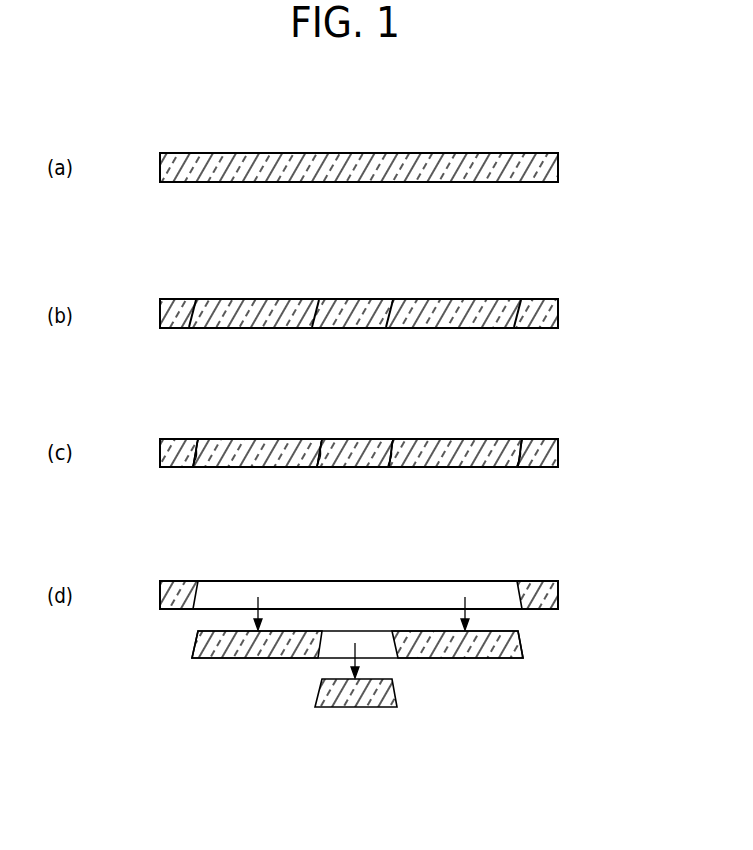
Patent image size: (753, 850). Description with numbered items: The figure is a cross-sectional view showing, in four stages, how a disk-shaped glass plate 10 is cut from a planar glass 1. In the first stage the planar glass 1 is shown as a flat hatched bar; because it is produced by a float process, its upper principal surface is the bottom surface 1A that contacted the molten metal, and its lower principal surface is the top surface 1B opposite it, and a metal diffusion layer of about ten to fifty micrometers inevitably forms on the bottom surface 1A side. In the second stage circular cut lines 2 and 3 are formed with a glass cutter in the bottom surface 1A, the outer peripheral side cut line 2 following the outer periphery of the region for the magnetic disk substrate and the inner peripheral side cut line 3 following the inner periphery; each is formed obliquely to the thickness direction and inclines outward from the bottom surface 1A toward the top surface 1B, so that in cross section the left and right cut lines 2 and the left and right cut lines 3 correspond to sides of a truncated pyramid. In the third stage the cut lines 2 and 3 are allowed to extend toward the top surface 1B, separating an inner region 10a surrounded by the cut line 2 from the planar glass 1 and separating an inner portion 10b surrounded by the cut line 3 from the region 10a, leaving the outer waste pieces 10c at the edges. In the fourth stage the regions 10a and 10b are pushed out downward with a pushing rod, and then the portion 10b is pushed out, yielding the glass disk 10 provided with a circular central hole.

The planar glass 1 is at (558, 152).
The bottom surface 1A is at (453, 150).
The top surface 1B is at (473, 186).
The cut line 2 is at (195, 299).
The cut line 3 is at (318, 299).
The disk-shaped glass plate 10 is at (521, 647).
The inner region 10a is at (256, 468).
The inner portion 10b is at (357, 468).
The edge waste piece 10c is at (175, 468).